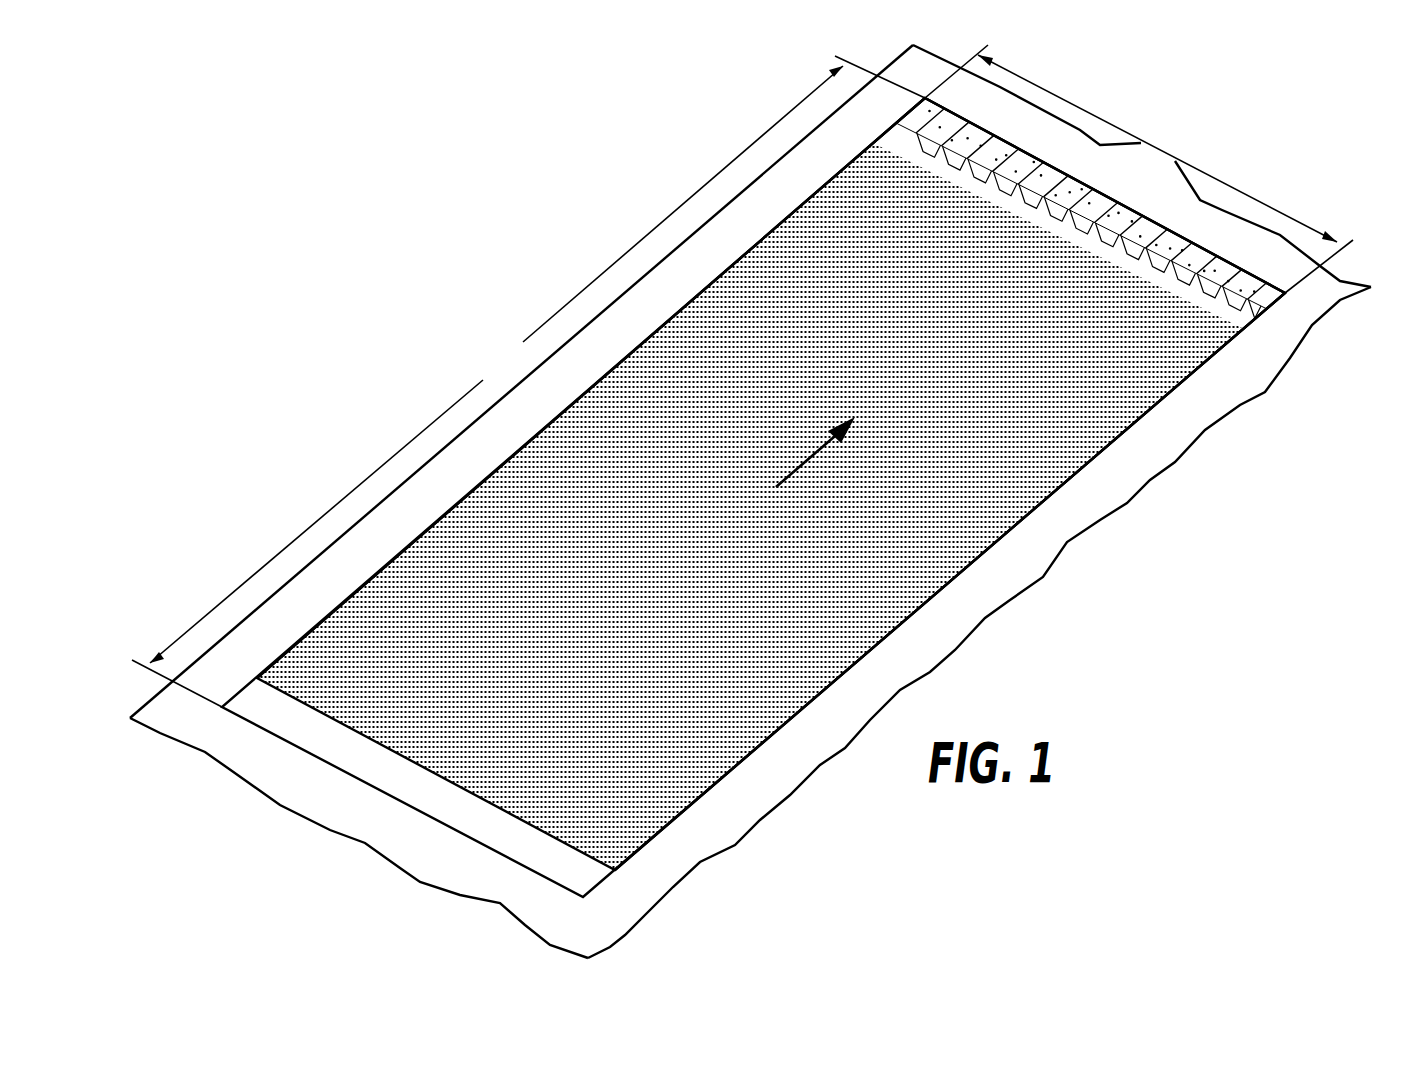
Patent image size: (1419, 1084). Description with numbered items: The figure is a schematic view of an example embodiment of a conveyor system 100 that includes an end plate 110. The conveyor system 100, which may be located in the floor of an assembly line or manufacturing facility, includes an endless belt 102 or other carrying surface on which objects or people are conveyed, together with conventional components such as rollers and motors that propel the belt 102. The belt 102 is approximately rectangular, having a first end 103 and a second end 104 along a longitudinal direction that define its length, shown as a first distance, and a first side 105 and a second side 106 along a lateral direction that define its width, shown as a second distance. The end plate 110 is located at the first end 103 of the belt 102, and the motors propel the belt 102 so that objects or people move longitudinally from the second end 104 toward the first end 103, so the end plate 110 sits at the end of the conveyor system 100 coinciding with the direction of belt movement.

The conveyor system 100 is at (750, 501).
The endless belt 102 is at (771, 481).
The first end 103 is at (1003, 140).
The second end 104 is at (372, 790).
The first side 105 is at (498, 462).
The second side 106 is at (1022, 522).
The end plate 110 is at (1181, 248).